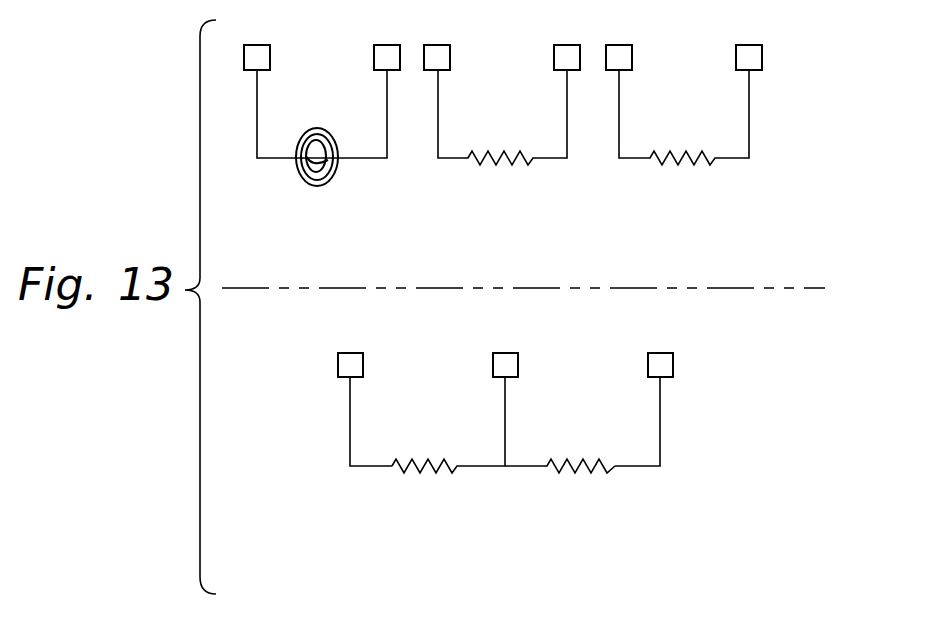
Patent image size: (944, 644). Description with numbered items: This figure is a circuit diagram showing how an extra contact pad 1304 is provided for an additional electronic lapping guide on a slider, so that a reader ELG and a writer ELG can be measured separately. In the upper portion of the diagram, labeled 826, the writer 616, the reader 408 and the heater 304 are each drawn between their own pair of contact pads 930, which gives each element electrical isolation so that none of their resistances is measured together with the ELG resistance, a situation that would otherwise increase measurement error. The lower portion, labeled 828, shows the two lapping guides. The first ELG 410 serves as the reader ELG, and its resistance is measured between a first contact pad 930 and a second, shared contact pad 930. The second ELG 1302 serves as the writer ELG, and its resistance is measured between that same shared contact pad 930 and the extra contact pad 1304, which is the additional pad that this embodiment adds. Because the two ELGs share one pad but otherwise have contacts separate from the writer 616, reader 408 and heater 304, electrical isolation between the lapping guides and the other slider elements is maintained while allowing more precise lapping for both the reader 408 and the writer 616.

The contact pads 930 is at (386, 59).
The writer 616 is at (320, 203).
The reader 408 is at (500, 201).
The heater 304 is at (678, 201).
The slider device region 826 is at (756, 219).
The electronic lapping guide region 828 is at (756, 346).
The extra contact pad 1304 is at (662, 362).
The first ELG 410 is at (438, 538).
The second ELG 1302 is at (573, 538).